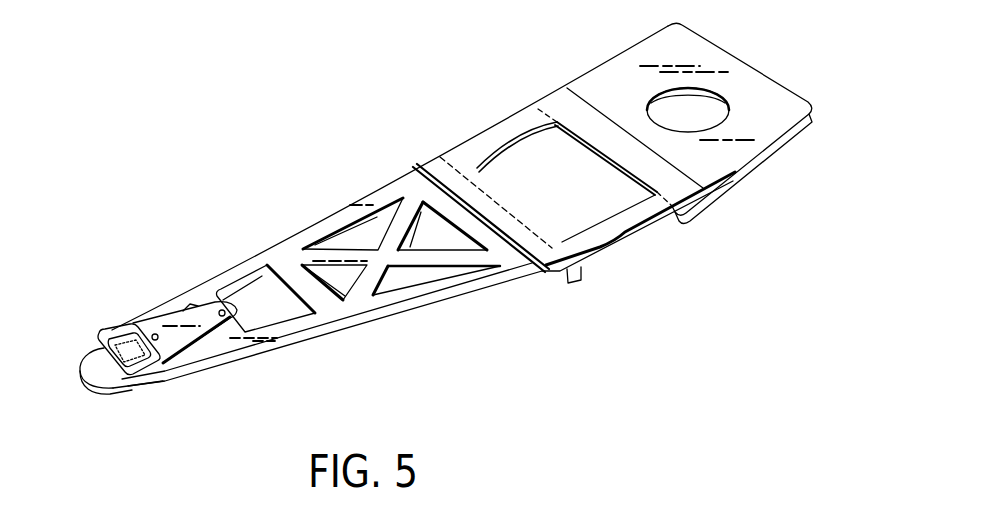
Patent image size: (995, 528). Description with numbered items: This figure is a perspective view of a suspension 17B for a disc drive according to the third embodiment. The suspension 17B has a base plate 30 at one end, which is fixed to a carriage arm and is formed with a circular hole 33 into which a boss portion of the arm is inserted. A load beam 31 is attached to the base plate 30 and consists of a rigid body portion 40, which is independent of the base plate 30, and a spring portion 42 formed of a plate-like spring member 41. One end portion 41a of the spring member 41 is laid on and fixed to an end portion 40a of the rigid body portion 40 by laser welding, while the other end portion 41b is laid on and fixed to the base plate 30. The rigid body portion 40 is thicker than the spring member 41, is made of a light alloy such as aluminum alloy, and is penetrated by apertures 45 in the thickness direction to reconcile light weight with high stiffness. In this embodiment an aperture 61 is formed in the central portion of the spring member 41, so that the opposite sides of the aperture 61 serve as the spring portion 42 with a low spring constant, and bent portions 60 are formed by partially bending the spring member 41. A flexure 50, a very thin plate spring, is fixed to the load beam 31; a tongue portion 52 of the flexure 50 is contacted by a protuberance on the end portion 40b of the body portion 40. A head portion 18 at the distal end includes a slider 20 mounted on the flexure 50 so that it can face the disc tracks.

The suspension 17B is at (277, 159).
The base plate 30 is at (763, 138).
The circular hole 33 is at (718, 122).
The spring member 41 is at (472, 148).
The one end portion of the spring member 41a is at (446, 176).
The other end portion of the spring member 41b is at (604, 125).
The aperture 61 is at (542, 172).
The bent portions 60 is at (510, 138).
The spring portion 42 is at (607, 252).
The end portion of the rigid body portion 40a is at (565, 284).
The rigid body portion 40 is at (333, 333).
The load beam 31 is at (470, 305).
The head portion 18 is at (103, 366).
The apertures 45 is at (348, 243).
The flexure 50 is at (177, 320).
The tongue portion 52 is at (126, 327).
The slider 20 is at (140, 332).
The end portion of the body portion 40b is at (168, 365).